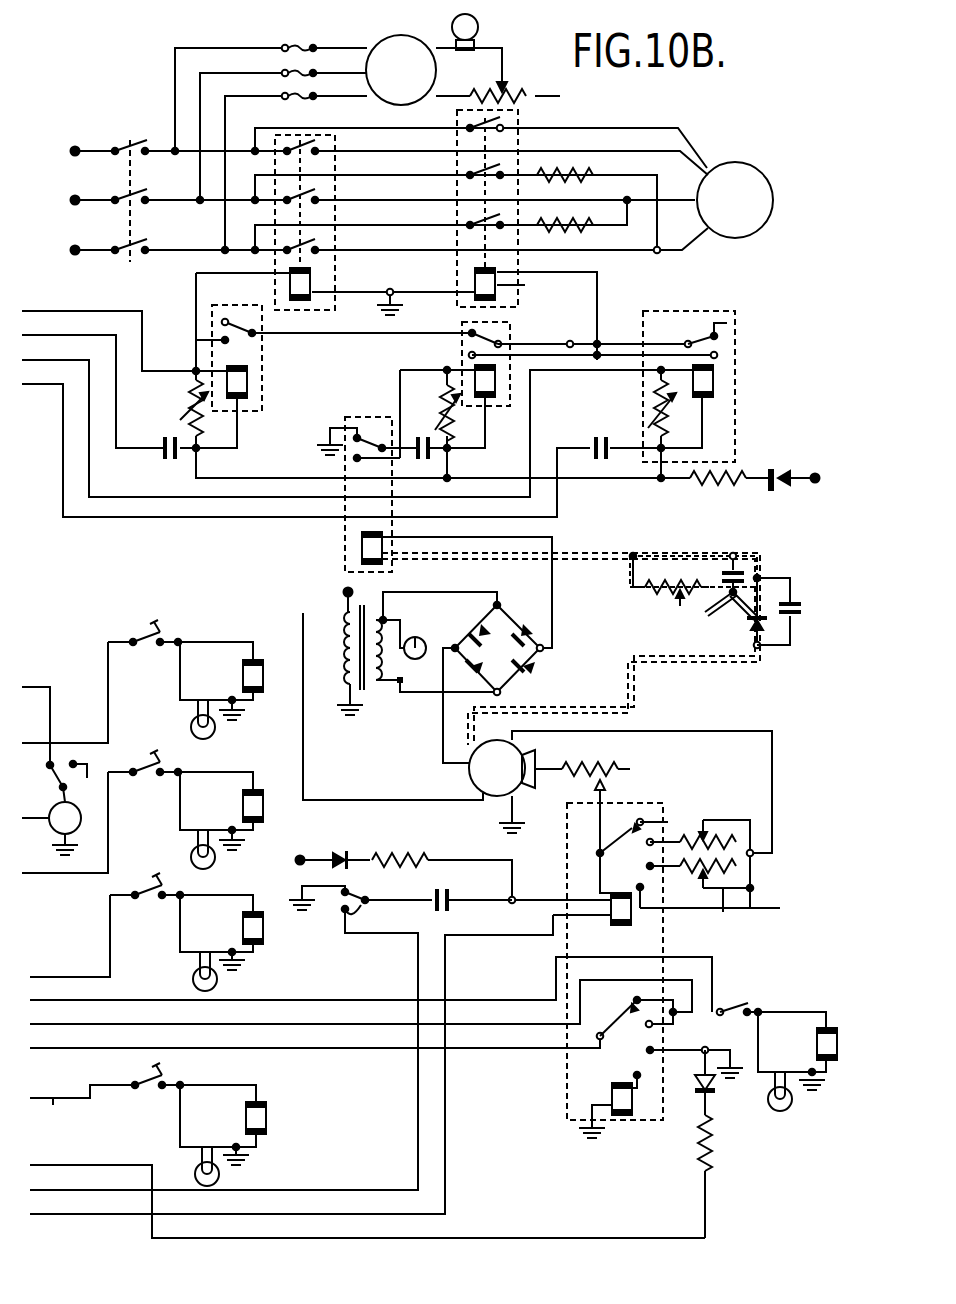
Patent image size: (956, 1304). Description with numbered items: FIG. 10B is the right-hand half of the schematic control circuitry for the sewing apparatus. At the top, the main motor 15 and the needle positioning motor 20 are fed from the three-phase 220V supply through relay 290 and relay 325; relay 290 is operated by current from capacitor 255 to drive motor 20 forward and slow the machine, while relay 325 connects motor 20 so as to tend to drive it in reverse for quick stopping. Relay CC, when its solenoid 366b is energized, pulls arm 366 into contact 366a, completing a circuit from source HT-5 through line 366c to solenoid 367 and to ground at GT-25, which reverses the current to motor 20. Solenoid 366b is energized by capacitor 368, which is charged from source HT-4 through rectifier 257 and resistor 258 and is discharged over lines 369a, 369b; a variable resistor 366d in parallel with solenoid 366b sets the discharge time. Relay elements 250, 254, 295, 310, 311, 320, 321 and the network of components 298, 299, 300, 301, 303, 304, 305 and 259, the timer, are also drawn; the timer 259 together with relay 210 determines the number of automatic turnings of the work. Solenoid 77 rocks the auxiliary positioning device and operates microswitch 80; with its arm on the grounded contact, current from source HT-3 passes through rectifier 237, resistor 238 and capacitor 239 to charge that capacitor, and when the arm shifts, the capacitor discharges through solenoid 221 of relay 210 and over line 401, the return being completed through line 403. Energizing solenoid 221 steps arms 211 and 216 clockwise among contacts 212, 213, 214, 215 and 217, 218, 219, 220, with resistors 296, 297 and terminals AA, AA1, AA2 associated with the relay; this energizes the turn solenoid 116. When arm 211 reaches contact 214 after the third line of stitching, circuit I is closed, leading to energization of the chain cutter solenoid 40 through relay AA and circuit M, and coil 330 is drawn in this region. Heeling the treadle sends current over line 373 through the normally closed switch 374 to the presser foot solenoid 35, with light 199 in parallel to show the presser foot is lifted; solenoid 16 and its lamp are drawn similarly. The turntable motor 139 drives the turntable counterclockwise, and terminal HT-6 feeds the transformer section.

The main motor 15 is at (370, 28).
The needle positioning motor 20 is at (750, 211).
The relay 290 is at (335, 143).
The relay 325 is at (520, 118).
The solenoid 367 is at (536, 314).
The line 366c is at (601, 319).
The relay switch 250 is at (228, 306).
The relay coil 254 is at (247, 382).
The variable resistor 295 is at (180, 409).
The capacitor 255 is at (165, 439).
The line 369a is at (133, 517).
The line 369b is at (138, 497).
The relay switch 310 is at (364, 416).
The relay coil 311 is at (362, 547).
The relay switch 320 is at (470, 353).
The relay coil 321 is at (493, 385).
The arm of relay CC 366 is at (696, 331).
The contact 366a is at (717, 355).
The solenoid of relay CC 366b is at (707, 387).
The variable resistor 366d is at (675, 394).
The capacitor 368 is at (597, 438).
The resistor 258 is at (707, 484).
The rectifier 257 is at (772, 491).
The capacitor 305 is at (727, 570).
The variable resistor 303 is at (663, 593).
The capacitor 304 is at (817, 591).
The rectifier 299 is at (757, 622).
The bridge rectifier 301 is at (533, 660).
The transformer 300 is at (368, 690).
The timer 259 is at (472, 773).
The variable resistor 298 is at (617, 757).
The relay 210 is at (665, 803).
The relay contact 217 is at (640, 821).
The relay contact 218 is at (655, 838).
The relay contact 219 is at (650, 866).
The switch arm of relay 210 216 is at (593, 873).
The relay contact 220 is at (638, 887).
The variable resistor 296 is at (723, 832).
The variable resistor 297 is at (685, 878).
The solenoid of relay 210 221 is at (618, 927).
The rectifier 237 is at (348, 868).
The resistor 238 is at (415, 858).
The capacitor 239 is at (450, 897).
The microswitch 80 is at (340, 908).
The line 401 is at (447, 1125).
The line 403 is at (390, 1147).
The arm of relay 210 211 is at (611, 1022).
The relay contact 212 is at (637, 998).
The relay contact 213 is at (648, 1024).
The contact 214 is at (652, 1050).
The relay contact 215 is at (637, 1071).
The relay coil 330 is at (613, 1096).
The turn solenoid 116 is at (817, 1053).
The solenoid 77 is at (218, 603).
The turntable motor 139 is at (55, 807).
The normally closed switch 374 is at (143, 762).
The line 373 is at (112, 817).
The presser foot solenoid 35 is at (243, 803).
The light 199 is at (191, 857).
The transmitter clutch solenoid 16 is at (243, 925).
The chain cutter solenoid 40 is at (265, 1125).
The relay AA is at (602, 792).
The terminal AA1 is at (750, 828).
The terminal AA2 is at (727, 932).
The relay CC is at (738, 368).
The current source HT-3 is at (298, 860).
The current source HT-4 is at (814, 478).
The current source HT-5 is at (572, 343).
The terminal HT-6 is at (345, 590).
The ground terminal GT-25 is at (402, 297).
The circuit I is at (705, 1144).
The power supply terminals 220V is at (211, 153).